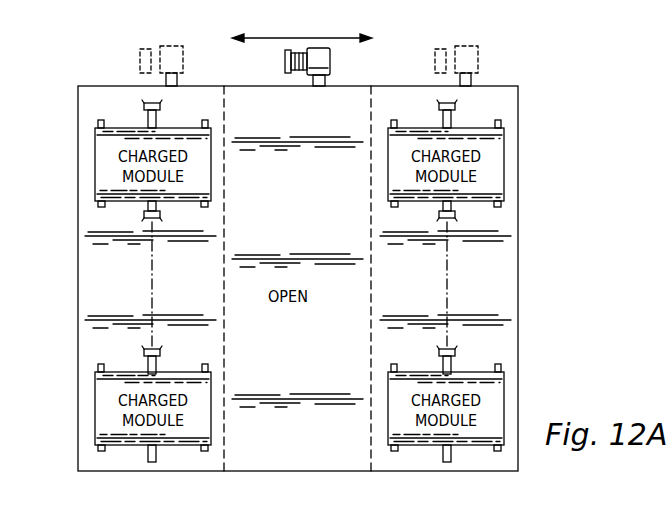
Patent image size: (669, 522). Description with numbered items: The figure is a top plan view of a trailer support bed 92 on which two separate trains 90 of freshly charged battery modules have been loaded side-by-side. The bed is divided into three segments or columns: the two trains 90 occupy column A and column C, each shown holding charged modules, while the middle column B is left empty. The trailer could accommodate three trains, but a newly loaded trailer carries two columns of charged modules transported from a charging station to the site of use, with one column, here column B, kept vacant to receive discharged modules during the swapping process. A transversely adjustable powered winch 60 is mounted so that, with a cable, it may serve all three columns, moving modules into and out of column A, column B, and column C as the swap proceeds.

The transversely adjustable powered winch 60 is at (158, 48).
The train 90 is at (95, 160).
The trailer support bed 92 is at (498, 105).
The column A is at (122, 110).
The column B is at (350, 118).
The column C is at (486, 239).